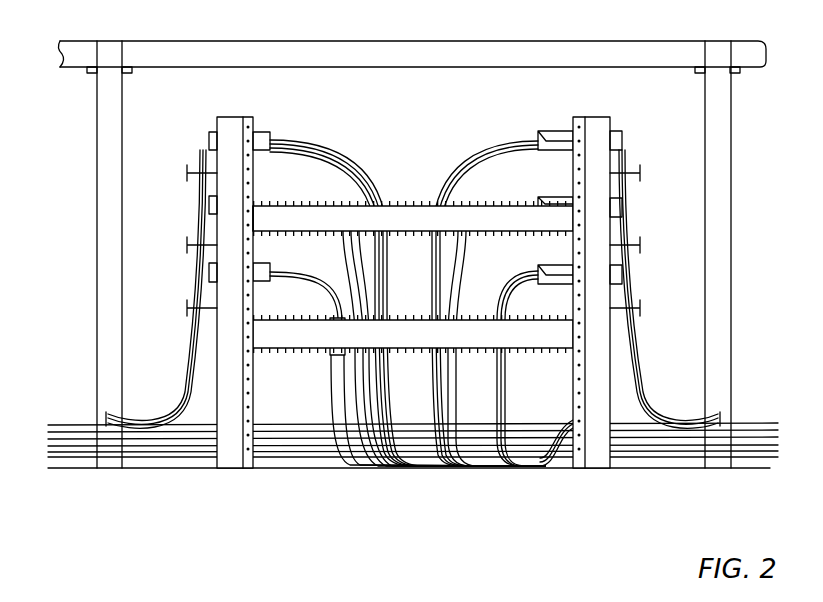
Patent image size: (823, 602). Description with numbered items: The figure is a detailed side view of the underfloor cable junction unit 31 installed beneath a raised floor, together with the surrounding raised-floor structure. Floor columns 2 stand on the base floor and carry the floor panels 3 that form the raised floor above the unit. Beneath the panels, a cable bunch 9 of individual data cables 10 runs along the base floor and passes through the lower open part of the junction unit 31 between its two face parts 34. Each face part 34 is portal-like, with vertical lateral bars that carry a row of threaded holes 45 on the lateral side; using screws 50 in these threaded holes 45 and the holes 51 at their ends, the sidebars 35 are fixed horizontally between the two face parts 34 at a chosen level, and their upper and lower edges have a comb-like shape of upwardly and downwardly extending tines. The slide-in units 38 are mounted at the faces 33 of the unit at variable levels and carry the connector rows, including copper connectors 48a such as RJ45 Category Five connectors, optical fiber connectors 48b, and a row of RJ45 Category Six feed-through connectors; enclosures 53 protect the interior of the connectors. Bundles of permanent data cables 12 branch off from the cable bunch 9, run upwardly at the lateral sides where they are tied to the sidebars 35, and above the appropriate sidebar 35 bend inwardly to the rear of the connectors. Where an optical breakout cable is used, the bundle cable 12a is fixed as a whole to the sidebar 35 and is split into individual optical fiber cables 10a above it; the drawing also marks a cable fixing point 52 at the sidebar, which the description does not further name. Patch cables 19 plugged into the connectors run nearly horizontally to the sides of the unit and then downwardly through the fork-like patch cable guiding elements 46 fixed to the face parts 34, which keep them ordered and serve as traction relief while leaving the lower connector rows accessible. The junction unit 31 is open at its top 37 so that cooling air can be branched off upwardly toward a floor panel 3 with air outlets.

The floor column 2 is at (103, 300).
The floor panel 3 is at (760, 52).
The cable bunch 9 is at (775, 450).
The data cable 10 is at (328, 128).
The individual optical fiber cable 10a is at (413, 364).
The permanent data cable 12 is at (443, 470).
The bundle cable 12a is at (355, 455).
The patch cable 19 is at (640, 357).
The underfloor cable junction unit 31 is at (262, 478).
The face 33 is at (657, 257).
The face part 34 is at (232, 460).
The sidebar 35 is at (490, 224).
The top 37 is at (428, 122).
The slide-in unit 38 is at (541, 130).
The threaded hole 45 is at (578, 400).
The patch cable guiding element 46 is at (640, 233).
The copper cable connector 48a is at (205, 200).
The optical fiber connector 48b is at (205, 272).
The screw 50 is at (252, 206).
The hole 51 is at (252, 206).
The cable clamp 52 is at (305, 360).
The enclosure 53 is at (556, 130).